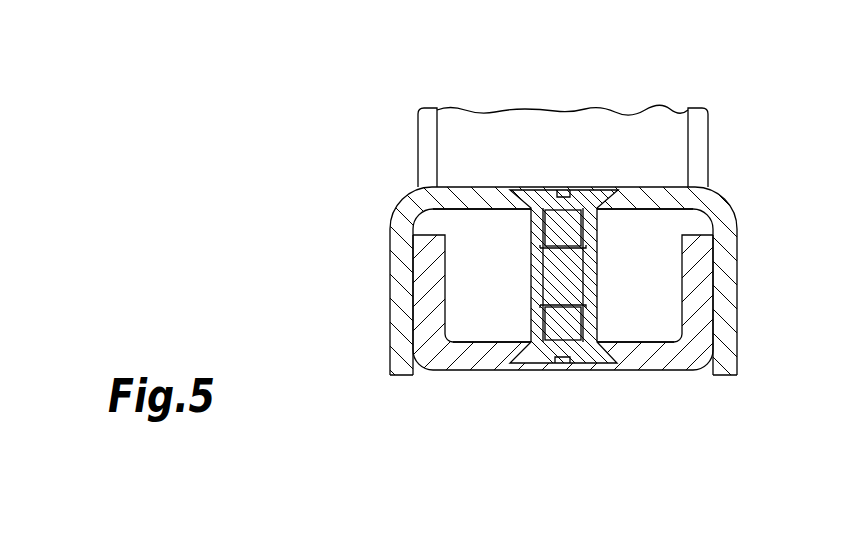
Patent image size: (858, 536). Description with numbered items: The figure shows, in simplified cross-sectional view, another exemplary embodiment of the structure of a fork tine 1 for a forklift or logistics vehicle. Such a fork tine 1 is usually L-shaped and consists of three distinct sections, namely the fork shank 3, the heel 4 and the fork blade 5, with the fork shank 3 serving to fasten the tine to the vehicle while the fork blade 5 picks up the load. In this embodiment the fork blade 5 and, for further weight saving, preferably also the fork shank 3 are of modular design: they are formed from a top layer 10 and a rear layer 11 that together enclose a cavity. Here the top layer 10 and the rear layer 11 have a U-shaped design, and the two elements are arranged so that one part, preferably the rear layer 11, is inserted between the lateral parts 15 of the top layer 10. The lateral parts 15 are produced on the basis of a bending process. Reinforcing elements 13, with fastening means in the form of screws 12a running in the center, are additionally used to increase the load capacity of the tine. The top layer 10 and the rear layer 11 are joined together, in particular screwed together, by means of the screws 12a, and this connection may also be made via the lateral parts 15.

The fork tine 1 is at (368, 171).
The fork shank 3 is at (578, 138).
The heel 4 is at (634, 284).
The fork blade 5 is at (723, 200).
The top layer 10 is at (645, 205).
The rear layer 11 is at (463, 352).
The screws 12a is at (547, 200).
The reinforcing elements 13 is at (560, 272).
The lateral parts 15 is at (420, 277).